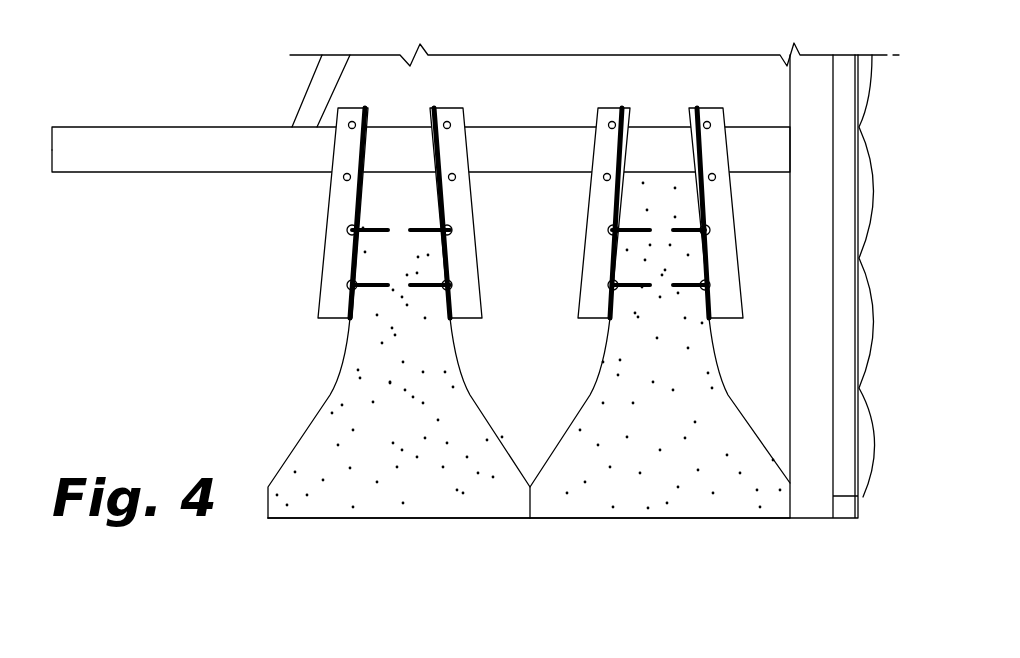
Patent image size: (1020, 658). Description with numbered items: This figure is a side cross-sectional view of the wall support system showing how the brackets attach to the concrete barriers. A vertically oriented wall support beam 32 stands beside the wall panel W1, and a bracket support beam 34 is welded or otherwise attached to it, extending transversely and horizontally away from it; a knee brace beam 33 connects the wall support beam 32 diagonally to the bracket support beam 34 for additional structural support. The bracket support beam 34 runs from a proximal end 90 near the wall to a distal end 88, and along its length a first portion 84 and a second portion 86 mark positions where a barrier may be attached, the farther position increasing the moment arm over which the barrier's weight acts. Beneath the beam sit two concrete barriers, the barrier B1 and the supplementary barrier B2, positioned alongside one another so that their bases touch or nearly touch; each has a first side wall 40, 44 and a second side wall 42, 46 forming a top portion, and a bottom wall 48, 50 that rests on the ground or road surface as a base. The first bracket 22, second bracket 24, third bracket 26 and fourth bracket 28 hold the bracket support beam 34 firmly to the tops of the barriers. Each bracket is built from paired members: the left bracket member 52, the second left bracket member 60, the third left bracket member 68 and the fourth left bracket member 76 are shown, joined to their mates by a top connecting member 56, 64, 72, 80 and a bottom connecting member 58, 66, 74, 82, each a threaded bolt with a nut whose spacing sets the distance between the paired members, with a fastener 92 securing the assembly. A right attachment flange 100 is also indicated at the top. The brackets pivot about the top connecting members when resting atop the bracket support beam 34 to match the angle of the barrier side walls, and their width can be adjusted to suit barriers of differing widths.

The right attachment flange 100 is at (556, 6).
The first bracket 22 is at (705, 92).
The second bracket 24 is at (618, 92).
The third bracket 26 is at (445, 92).
The fourth bracket 28 is at (357, 92).
The wall support beam 32 is at (810, 90).
The brace beam 33 is at (300, 100).
The bracket support beam 34 is at (107, 127).
The first side wall 40 is at (713, 353).
The second side wall 42 is at (600, 350).
The first side wall 44 is at (458, 353).
The second side wall 46 is at (345, 352).
The bottom wall 48 is at (695, 522).
The bottom wall 50 is at (375, 522).
The left bracket member 52 is at (736, 212).
The top connecting member 56 is at (709, 124).
The bottom connecting member 58 is at (714, 176).
The second left bracket member 60 is at (585, 245).
The second top connecting member 64 is at (610, 124).
The second bottom connecting member 66 is at (605, 175).
The third left bracket member 68 is at (482, 298).
The third top connecting member 72 is at (450, 124).
The third bottom connecting member 74 is at (454, 176).
The fourth left bracket member 76 is at (322, 270).
The fourth top connecting member 80 is at (350, 128).
The fourth bottom connecting member 82 is at (345, 178).
The first portion 84 is at (663, 104).
The second portion 86 is at (398, 104).
The distal end 88 is at (52, 148).
The proximal end 90 is at (793, 147).
The fastener 92 is at (352, 228).
The concrete barrier B1 is at (640, 488).
The supplementary barrier B2 is at (430, 495).
The wall panel W1 is at (868, 340).